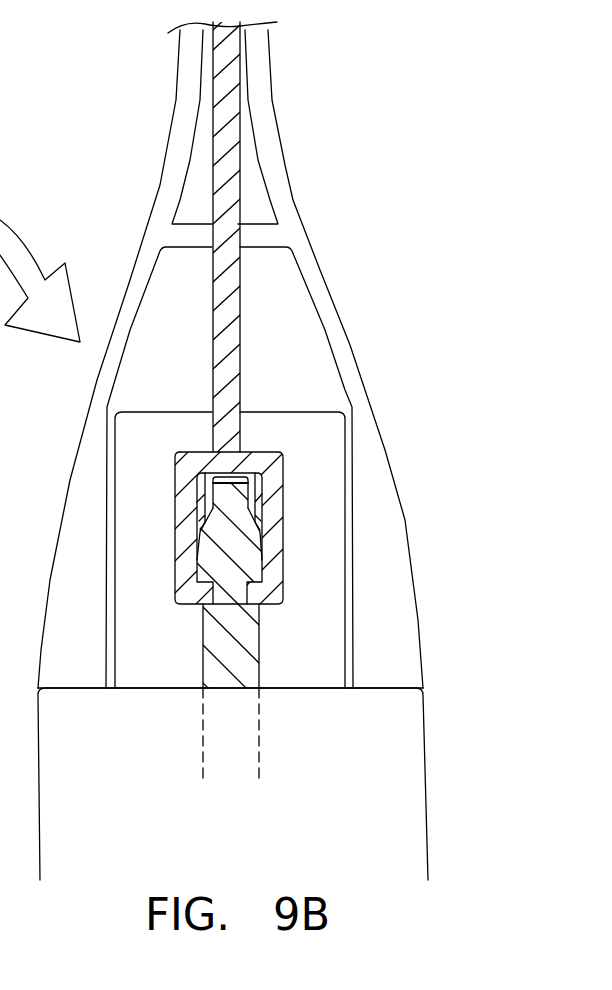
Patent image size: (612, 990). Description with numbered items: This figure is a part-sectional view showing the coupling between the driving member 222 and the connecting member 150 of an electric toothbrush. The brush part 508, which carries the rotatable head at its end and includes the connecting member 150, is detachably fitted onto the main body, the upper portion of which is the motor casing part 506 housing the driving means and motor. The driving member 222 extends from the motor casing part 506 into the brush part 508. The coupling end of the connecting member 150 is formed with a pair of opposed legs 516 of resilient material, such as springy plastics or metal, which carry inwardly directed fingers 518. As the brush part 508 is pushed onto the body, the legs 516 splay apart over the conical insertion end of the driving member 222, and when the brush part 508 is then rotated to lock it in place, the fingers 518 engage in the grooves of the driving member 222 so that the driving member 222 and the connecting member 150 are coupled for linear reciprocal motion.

The connecting member 150 is at (230, 120).
The brush part 508 is at (375, 383).
The legs 516 is at (185, 548).
The fingers 518 is at (273, 600).
The driving member 222 is at (250, 672).
The motor casing part 506 is at (393, 812).